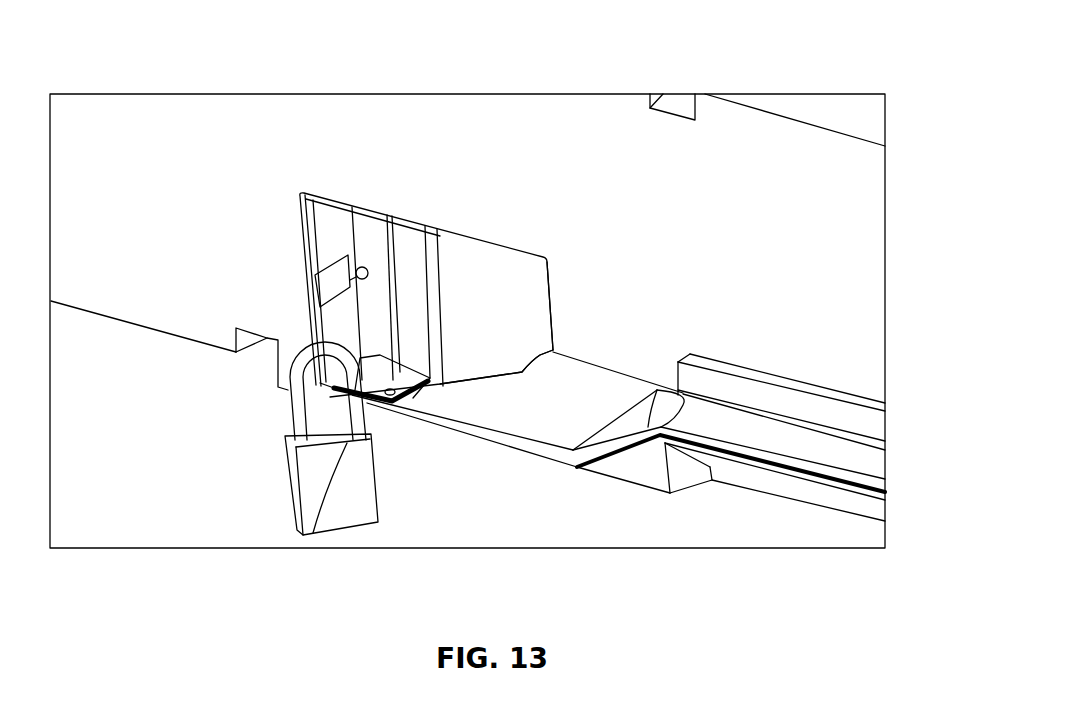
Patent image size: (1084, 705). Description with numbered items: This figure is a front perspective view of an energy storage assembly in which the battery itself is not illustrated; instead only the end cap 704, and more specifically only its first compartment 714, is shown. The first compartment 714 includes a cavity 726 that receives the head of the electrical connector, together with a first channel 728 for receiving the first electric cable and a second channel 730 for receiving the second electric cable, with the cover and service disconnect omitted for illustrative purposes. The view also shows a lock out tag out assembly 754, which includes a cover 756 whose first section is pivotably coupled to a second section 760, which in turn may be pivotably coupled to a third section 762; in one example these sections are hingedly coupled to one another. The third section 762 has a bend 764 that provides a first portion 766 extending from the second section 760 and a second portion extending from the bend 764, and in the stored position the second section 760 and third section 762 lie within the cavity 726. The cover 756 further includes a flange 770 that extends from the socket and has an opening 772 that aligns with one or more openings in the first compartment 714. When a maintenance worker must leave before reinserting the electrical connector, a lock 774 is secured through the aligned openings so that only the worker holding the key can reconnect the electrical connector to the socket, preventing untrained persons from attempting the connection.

The end cap 704 is at (852, 62).
The first compartment 714 is at (694, 86).
The cavity 726 is at (568, 383).
The first channel 728 is at (865, 408).
The second channel 730 is at (862, 468).
The lock out tag out (LOTO) assembly 754 is at (296, 475).
The cover 756 is at (472, 385).
The second section 760 is at (490, 353).
The third section 762 is at (373, 240).
The bend 764 is at (427, 370).
The first portion 766 is at (441, 386).
The flange 770 is at (300, 352).
The opening 772 is at (313, 533).
The lock 774 is at (279, 471).